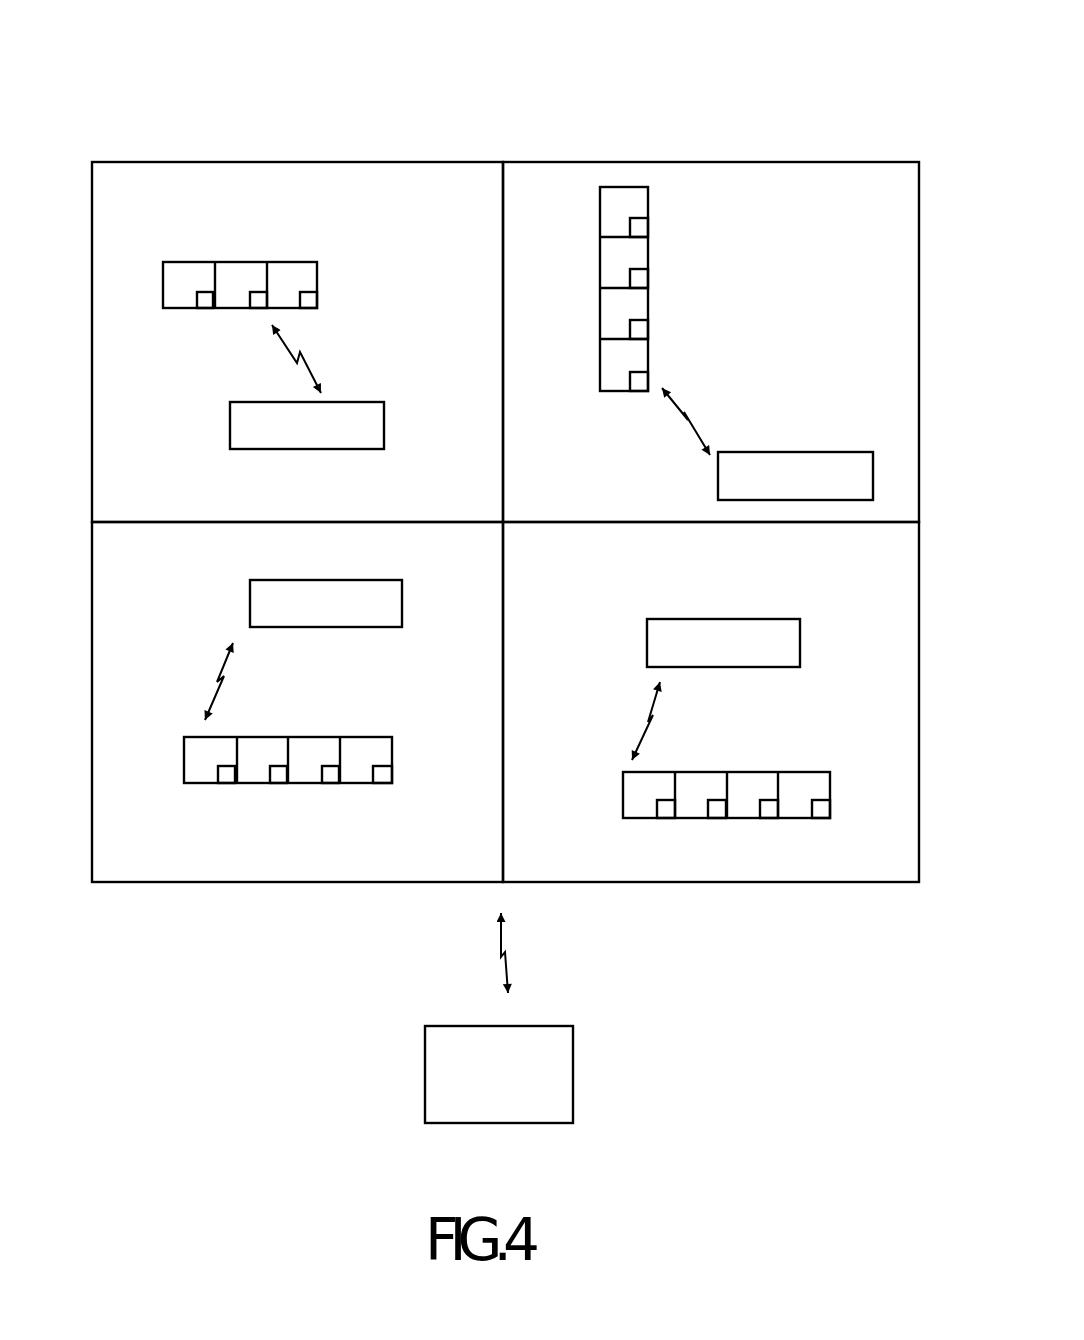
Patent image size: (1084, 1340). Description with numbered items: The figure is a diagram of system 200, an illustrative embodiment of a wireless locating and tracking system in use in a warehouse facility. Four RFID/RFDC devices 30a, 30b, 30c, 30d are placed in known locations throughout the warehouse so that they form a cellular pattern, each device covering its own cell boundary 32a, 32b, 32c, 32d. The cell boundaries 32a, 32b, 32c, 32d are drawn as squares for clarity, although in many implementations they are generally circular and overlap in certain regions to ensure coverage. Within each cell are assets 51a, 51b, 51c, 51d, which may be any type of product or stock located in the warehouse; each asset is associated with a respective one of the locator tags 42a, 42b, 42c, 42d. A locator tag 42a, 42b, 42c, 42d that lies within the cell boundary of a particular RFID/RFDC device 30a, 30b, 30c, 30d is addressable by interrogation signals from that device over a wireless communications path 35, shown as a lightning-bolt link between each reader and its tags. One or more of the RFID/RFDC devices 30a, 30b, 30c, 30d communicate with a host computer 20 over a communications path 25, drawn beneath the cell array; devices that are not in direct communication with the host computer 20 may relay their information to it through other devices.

The system 200 is at (502, 492).
The cell boundary 32a is at (365, 162).
The cell boundary 32b is at (815, 162).
The cell boundary 32c is at (115, 883).
The cell boundary 32d is at (898, 883).
The asset 51a is at (190, 262).
The asset 51b is at (600, 358).
The asset 51c is at (225, 737).
The asset 51d is at (660, 772).
The locator tag 42a is at (306, 308).
The locator tag 42b is at (642, 380).
The locator tag 42c is at (228, 783).
The locator tag 42d is at (665, 818).
The RFID/RFDC device 30a is at (362, 402).
The RFID/RFDC device 30b is at (812, 452).
The RFID/RFDC device 30c is at (402, 580).
The RFID/RFDC device 30d is at (748, 619).
The communications path 35 is at (298, 358).
The communications path 25 is at (510, 952).
The host computer 20 is at (573, 1080).